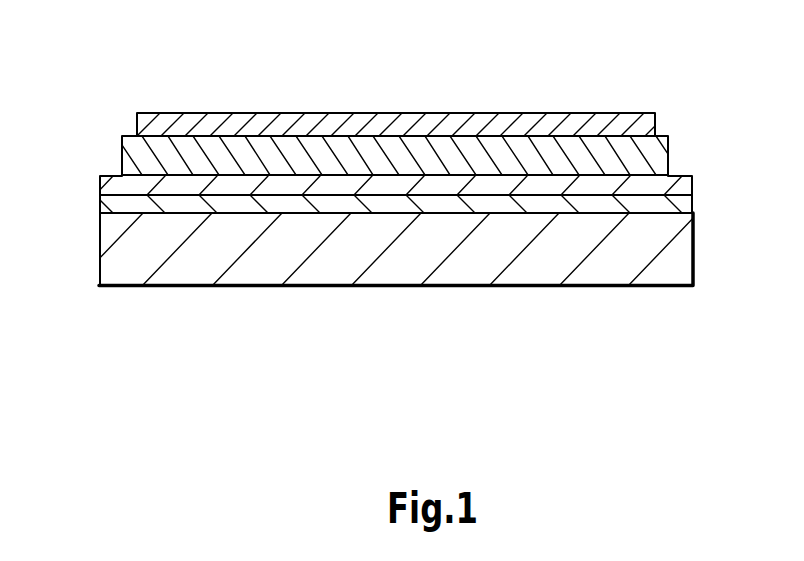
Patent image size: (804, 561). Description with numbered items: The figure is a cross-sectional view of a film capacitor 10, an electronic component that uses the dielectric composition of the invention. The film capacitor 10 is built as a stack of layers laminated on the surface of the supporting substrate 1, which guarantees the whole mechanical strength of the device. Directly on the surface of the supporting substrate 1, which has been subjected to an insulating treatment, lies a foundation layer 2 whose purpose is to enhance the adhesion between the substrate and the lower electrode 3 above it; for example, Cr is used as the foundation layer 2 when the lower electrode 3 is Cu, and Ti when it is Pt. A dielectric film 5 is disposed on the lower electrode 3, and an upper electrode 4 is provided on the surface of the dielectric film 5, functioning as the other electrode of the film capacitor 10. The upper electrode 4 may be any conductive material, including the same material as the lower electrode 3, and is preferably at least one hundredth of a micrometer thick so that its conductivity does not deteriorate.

The supporting substrate 1 is at (675, 248).
The foundation layer 2 is at (680, 202).
The lower electrode 3 is at (104, 185).
The upper electrode 4 is at (557, 116).
The dielectric film 5 is at (654, 153).
The film capacitor 10 is at (403, 210).